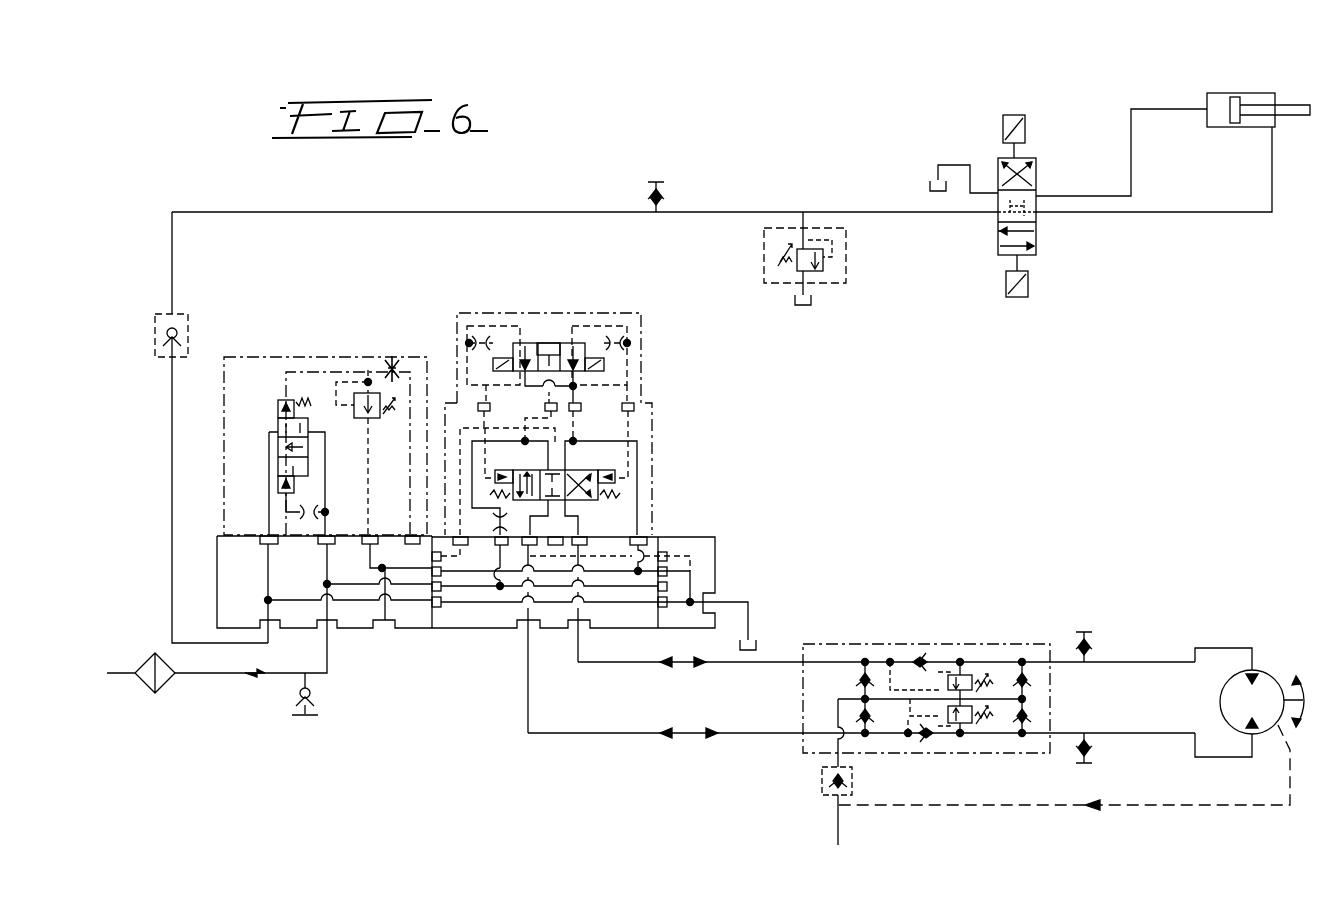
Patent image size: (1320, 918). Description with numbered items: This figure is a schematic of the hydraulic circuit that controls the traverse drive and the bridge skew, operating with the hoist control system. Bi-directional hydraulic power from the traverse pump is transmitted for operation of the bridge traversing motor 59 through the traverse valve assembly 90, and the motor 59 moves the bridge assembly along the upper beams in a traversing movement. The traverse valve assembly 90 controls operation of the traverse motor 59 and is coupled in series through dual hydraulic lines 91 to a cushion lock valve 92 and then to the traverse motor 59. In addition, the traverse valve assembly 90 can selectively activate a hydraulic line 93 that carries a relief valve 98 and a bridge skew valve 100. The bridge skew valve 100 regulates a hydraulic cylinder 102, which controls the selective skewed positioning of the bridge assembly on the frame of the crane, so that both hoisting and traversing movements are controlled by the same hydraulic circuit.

The bridge traversing motor 59 is at (1270, 676).
The traverse valve assembly 90 is at (617, 378).
The dual hydraulic lines 91 is at (720, 662).
The cushion lock valve 92 is at (985, 640).
The hydraulic line 93 is at (172, 280).
The relief valve 98 is at (846, 238).
The bridge skew valve 100 is at (1036, 236).
The hydraulic cylinder 102 is at (1218, 118).